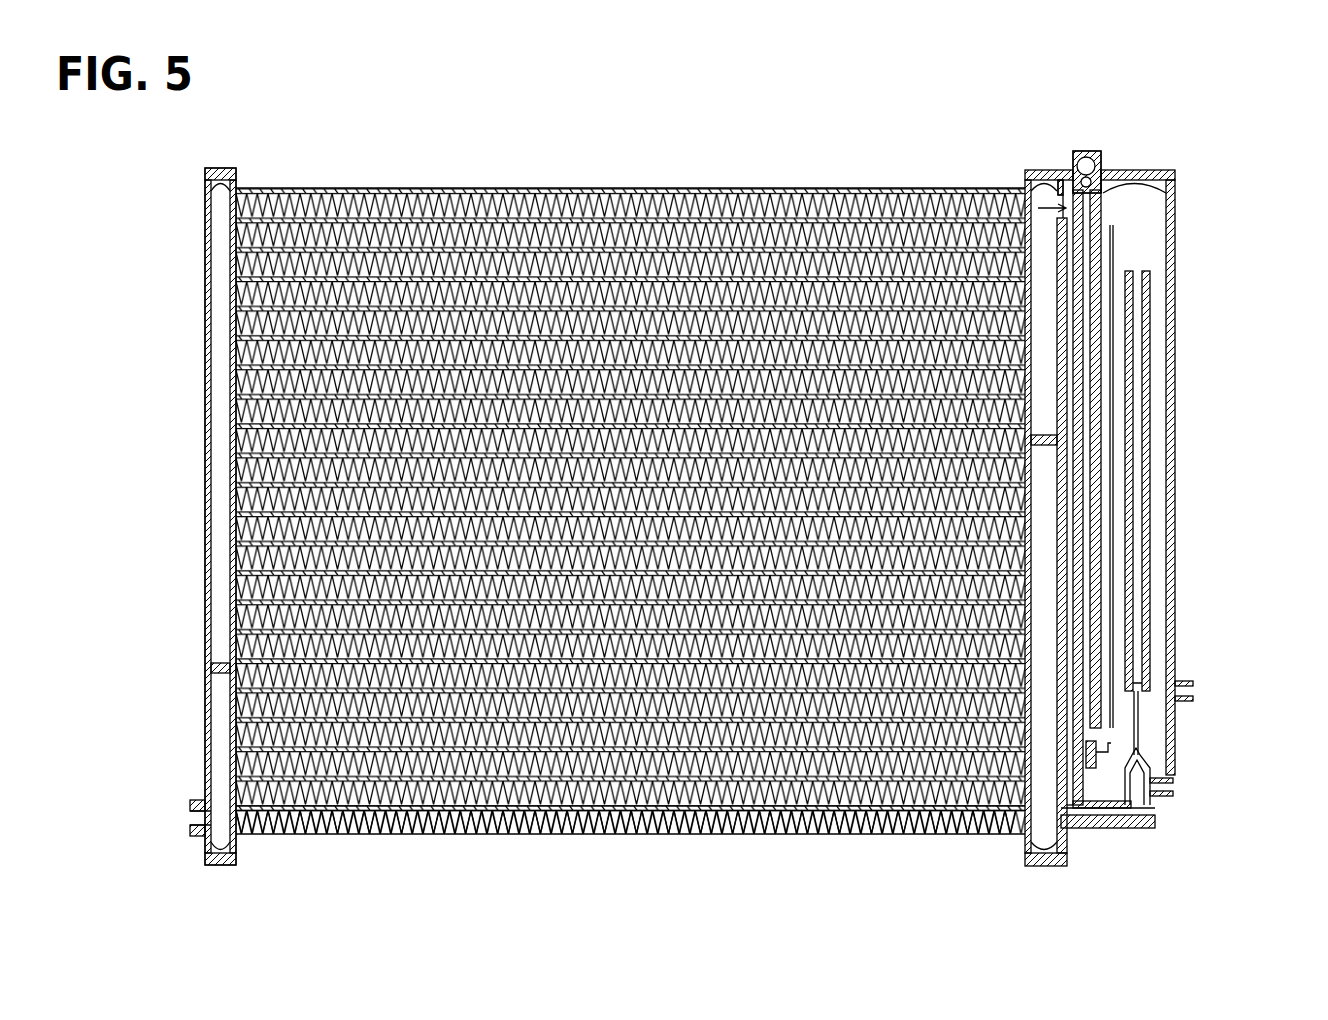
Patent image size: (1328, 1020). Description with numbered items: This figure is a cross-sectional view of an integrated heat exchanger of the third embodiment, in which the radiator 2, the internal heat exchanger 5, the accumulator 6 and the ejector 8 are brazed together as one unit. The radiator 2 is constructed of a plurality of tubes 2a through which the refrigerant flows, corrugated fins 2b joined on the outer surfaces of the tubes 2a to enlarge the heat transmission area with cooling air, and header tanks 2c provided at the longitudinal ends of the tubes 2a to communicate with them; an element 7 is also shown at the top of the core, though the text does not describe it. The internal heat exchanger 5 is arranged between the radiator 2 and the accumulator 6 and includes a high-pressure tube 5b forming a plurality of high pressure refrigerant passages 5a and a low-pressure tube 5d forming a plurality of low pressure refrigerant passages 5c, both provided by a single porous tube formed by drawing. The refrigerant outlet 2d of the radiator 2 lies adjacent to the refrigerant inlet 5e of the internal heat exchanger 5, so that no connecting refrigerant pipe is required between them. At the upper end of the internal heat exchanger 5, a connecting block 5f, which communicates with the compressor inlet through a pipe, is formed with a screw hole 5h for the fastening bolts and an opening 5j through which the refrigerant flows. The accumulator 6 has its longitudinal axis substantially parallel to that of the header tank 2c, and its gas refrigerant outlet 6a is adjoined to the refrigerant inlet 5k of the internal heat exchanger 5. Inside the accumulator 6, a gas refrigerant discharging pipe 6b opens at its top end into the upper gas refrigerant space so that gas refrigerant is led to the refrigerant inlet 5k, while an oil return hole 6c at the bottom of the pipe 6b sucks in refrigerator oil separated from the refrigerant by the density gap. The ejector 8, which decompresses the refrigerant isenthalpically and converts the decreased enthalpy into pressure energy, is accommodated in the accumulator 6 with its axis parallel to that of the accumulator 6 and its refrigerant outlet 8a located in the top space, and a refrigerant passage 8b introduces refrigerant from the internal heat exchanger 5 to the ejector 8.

The radiator 2 is at (378, 745).
The tube 2a is at (620, 795).
The fin 2b is at (432, 795).
The header tank 2c is at (699, 499).
The refrigerant outlet 2d is at (1040, 192).
The internal heat exchanger 5 is at (1192, 499).
The high pressure refrigerant passage 5a is at (1192, 497).
The high-pressure tube 5b is at (1063, 517).
The low pressure refrigerant passage 5c is at (1198, 459).
The low-pressure tube 5d is at (1077, 553).
The refrigerant inlet 5e is at (1057, 167).
The connecting block 5f is at (1088, 145).
The screw hole 5h is at (1092, 172).
The opening 5j is at (1078, 150).
The refrigerant inlet 5k is at (1087, 737).
The accumulator 6 is at (1177, 317).
The gas refrigerant outlet 6a is at (1127, 737).
The gas refrigerant discharging pipe 6b is at (1105, 357).
The oil return hole 6c is at (1103, 722).
The side plate 7 is at (554, 172).
The ejector 8 is at (1159, 673).
The refrigerant outlet 8a is at (1133, 262).
The refrigerant passage 8b is at (1100, 820).